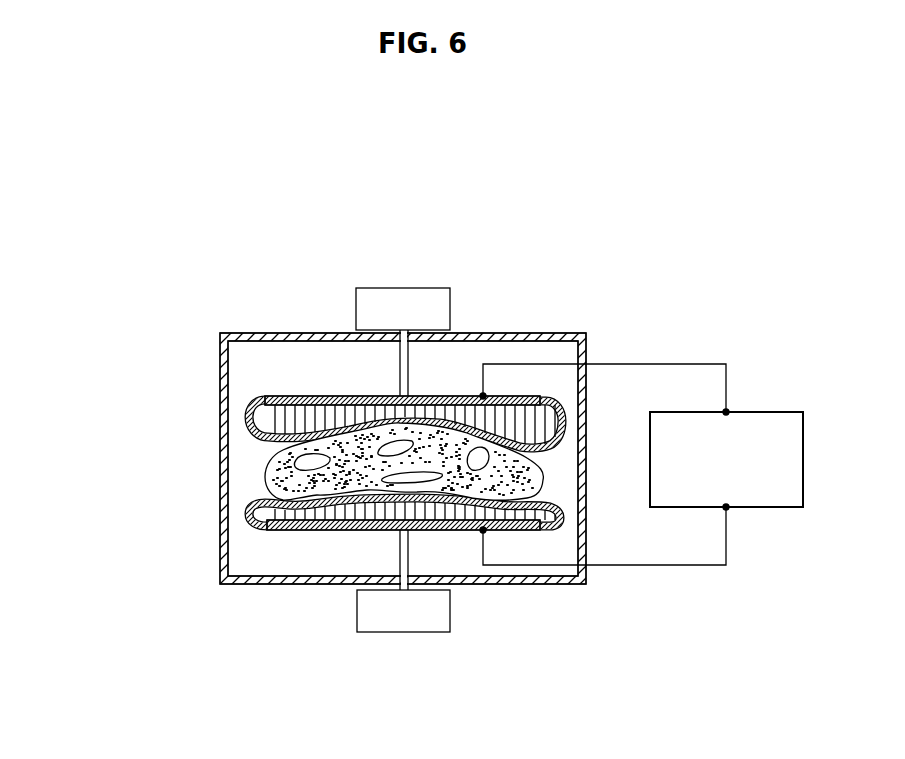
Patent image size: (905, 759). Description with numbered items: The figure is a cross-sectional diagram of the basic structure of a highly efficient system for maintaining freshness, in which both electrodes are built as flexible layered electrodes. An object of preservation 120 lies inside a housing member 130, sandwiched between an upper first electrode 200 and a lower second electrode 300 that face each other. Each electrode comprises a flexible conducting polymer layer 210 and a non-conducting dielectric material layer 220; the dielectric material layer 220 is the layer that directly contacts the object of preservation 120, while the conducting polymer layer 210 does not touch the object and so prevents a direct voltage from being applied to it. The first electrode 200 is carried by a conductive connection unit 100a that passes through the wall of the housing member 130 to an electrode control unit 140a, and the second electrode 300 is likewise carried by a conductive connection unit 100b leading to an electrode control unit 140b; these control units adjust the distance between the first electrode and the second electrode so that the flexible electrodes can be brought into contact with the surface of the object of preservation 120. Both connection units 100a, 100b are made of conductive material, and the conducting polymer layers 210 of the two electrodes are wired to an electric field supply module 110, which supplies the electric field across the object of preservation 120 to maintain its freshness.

The connection unit 100a is at (293, 396).
The connection unit 100b is at (287, 531).
The electric field supply module 110 is at (641, 464).
The object of preservation 120 is at (268, 470).
The housing member 130 is at (524, 334).
The electrode control unit 140a is at (400, 288).
The electrode control unit 140b is at (400, 632).
The first electrode 200 is at (103, 375).
The flexible conducting polymer layer 210 is at (262, 398).
The non-conducting dielectric material layer 220 is at (250, 434).
The lower electrode assembly 300 is at (101, 505).